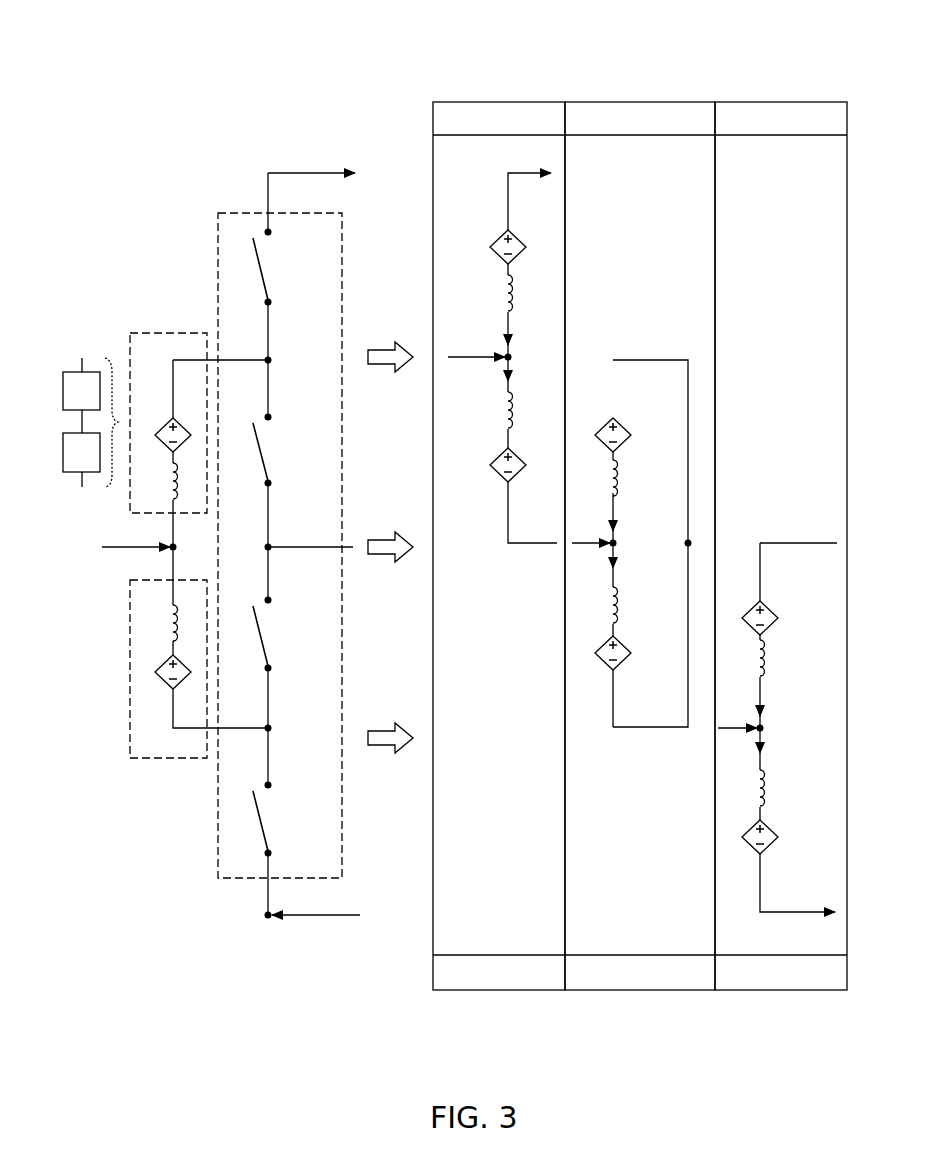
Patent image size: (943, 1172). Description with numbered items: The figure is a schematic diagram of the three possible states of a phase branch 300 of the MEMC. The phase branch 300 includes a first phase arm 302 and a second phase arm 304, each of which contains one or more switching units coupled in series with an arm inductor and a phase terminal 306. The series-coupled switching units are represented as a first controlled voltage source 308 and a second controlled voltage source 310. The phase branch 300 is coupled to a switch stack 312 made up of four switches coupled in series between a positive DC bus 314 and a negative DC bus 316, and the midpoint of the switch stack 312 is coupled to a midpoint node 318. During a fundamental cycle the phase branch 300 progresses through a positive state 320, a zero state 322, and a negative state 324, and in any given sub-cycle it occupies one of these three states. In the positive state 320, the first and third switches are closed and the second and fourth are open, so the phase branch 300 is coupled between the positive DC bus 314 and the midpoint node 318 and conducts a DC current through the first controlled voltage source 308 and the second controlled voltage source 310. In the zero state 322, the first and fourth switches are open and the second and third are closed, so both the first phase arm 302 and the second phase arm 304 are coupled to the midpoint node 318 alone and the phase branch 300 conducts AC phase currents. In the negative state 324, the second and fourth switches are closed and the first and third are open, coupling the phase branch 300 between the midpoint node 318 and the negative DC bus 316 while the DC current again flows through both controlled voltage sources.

The phase branch 300 is at (336, 70).
The first phase arm 302 is at (170, 333).
The second phase arm 304 is at (172, 758).
The phase terminal 306 is at (112, 562).
The first controlled voltage source 308 is at (158, 420).
The second controlled voltage source 310 is at (158, 682).
The switch stack 312 is at (238, 878).
The positive DC bus 314 is at (313, 168).
The negative DC bus 316 is at (322, 915).
The midpoint node 318 is at (312, 552).
The positive state 320 is at (495, 990).
The zero state 322 is at (640, 990).
The negative state 324 is at (782, 990).